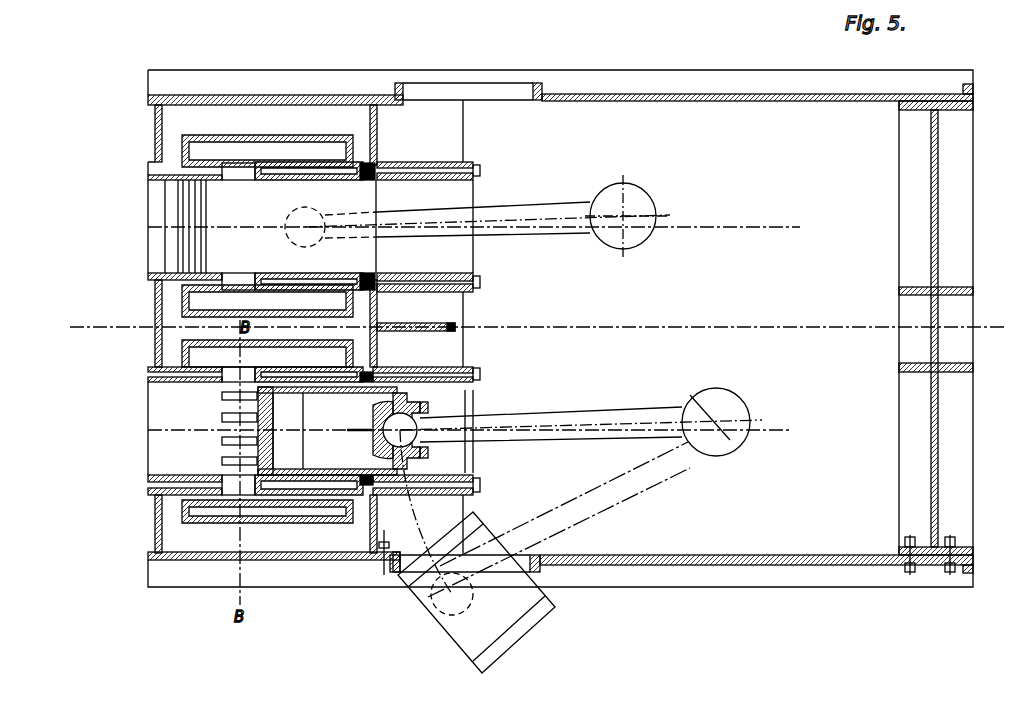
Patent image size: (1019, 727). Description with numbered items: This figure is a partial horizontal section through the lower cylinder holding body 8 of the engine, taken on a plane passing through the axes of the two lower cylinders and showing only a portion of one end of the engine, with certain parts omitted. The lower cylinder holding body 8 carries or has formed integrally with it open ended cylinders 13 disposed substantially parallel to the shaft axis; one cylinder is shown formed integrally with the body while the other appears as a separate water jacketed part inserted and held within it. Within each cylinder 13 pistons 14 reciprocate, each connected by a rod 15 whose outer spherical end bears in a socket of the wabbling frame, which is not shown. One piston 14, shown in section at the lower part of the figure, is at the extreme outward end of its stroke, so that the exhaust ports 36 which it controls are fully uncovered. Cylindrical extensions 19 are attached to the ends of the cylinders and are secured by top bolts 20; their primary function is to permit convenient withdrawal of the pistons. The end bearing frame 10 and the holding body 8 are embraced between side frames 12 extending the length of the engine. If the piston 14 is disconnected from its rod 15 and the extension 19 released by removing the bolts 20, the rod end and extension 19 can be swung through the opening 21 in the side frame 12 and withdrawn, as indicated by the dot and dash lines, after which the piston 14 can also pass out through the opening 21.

The lower part of cylinder holding body 8 is at (317, 102).
The end bearing frame 10 is at (938, 162).
The side frame 12 is at (769, 95).
The open ended cylinder 13 is at (148, 393).
The piston 14 is at (168, 248).
The rod 15 is at (535, 210).
The cylindrical extension 19 is at (474, 200).
The top bolt 20 is at (477, 165).
The opening 21 is at (508, 92).
The exhaust port 36 is at (242, 172).